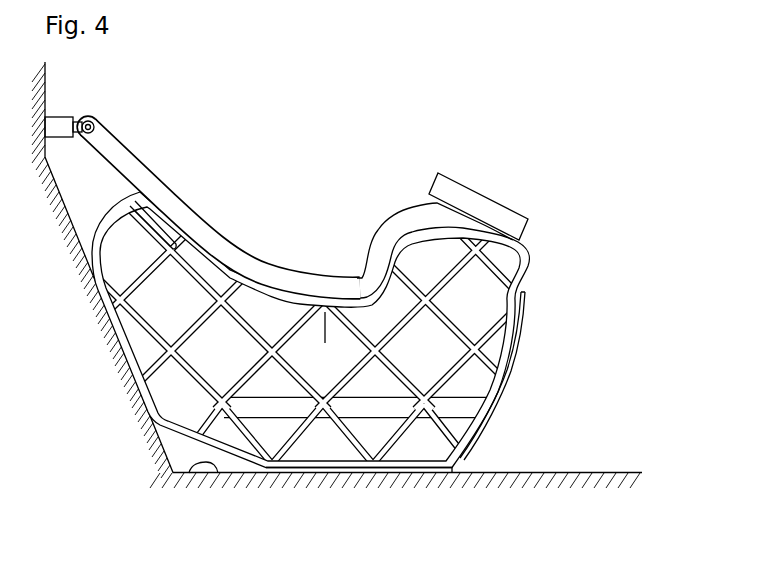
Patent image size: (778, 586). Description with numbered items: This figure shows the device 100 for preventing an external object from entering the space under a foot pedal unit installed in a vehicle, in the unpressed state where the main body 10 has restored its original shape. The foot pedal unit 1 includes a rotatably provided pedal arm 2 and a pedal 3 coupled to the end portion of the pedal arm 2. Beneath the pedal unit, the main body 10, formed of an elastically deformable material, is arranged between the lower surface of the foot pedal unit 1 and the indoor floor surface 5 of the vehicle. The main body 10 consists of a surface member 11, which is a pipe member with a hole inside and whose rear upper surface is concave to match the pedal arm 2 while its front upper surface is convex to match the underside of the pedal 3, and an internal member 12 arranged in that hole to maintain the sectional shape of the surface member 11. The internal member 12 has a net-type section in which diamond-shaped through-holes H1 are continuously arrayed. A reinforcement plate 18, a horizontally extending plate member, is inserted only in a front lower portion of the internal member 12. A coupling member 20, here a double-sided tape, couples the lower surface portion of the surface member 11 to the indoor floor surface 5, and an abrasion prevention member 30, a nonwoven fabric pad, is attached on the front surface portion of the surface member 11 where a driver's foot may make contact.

The foot pedal unit 1 is at (392, 175).
The pedal arm 2 is at (237, 258).
The pedal 3 is at (487, 204).
The indoor floor surface 5 is at (190, 473).
The main body 10 is at (541, 271).
The surface member 11 is at (121, 228).
The internal member 12 is at (197, 270).
The reinforcement plate 18 is at (464, 408).
The coupling member 20 is at (380, 472).
The abrasion prevention member 30 is at (522, 374).
The device for preventing an external object from entering a space under a foot peda 100 is at (580, 338).
The through-holes H1 is at (325, 312).